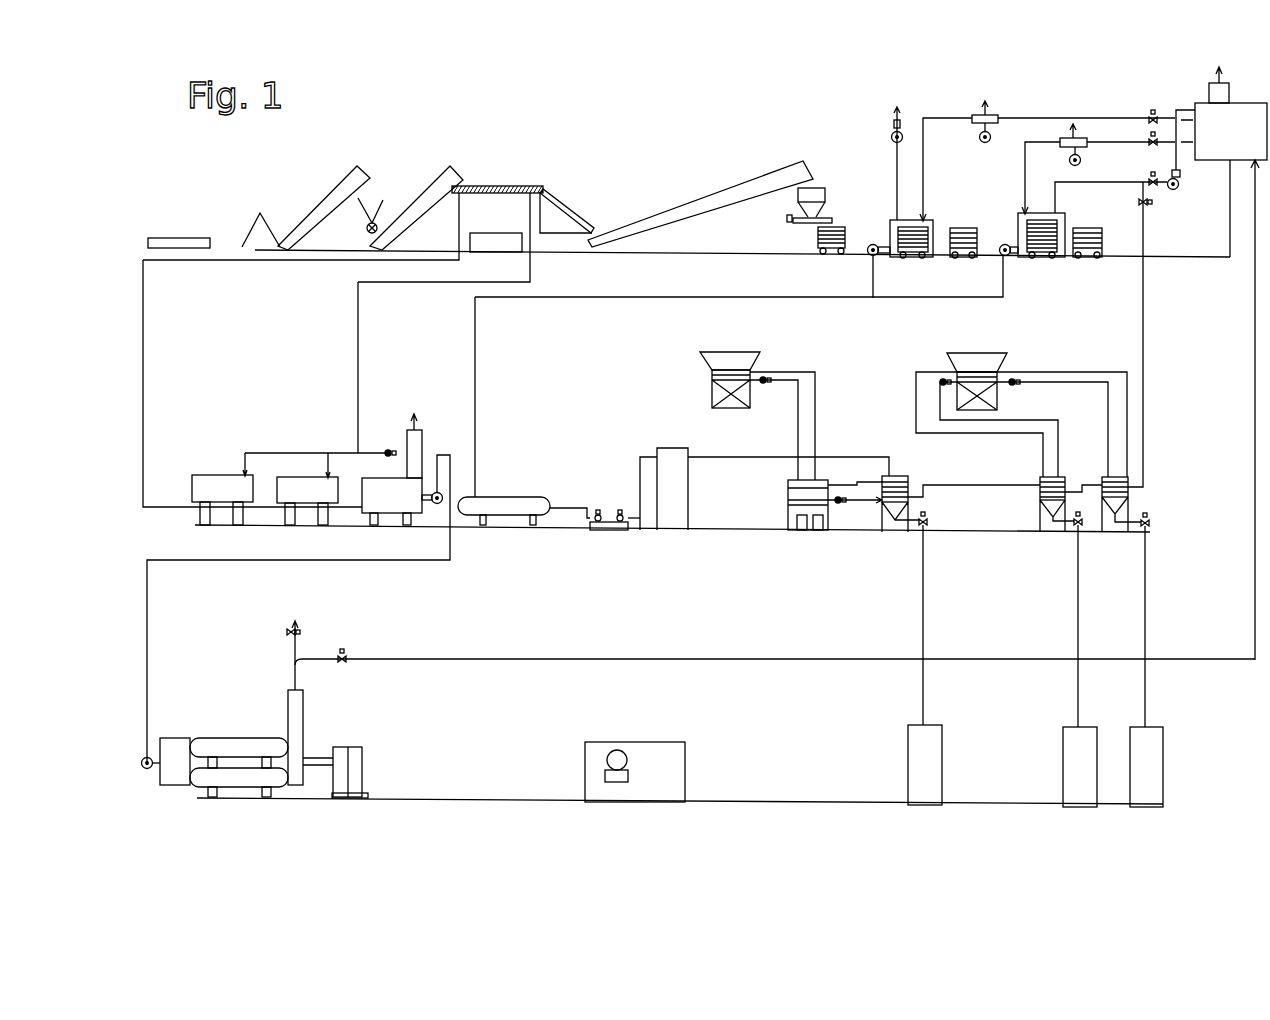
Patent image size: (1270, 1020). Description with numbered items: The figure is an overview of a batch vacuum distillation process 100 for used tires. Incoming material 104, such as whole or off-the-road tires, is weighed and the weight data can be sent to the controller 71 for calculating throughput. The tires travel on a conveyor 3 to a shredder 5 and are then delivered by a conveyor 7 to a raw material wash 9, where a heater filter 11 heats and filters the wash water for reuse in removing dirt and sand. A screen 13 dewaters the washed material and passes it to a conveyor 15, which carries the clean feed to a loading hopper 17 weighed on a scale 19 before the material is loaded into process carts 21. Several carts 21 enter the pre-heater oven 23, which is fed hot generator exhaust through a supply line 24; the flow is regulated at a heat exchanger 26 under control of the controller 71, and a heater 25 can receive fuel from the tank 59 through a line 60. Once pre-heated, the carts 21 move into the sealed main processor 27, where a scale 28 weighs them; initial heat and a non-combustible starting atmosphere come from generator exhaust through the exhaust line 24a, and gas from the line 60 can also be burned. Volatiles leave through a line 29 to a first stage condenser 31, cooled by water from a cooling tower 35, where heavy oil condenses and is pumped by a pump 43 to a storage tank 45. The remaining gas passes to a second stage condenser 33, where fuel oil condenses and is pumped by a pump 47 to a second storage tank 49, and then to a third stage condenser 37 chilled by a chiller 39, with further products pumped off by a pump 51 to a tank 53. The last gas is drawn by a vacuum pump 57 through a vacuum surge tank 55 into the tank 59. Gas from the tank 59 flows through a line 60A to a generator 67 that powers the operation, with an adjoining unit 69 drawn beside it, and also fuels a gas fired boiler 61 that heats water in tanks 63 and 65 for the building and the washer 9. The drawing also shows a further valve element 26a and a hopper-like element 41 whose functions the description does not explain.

The process 100 is at (540, 122).
The incoming material 104 is at (174, 238).
The conveyor 3 is at (338, 186).
The shredder 5 is at (366, 231).
The conveyor 7 is at (435, 178).
The raw material wash 9 is at (498, 185).
The heater filter 11 is at (510, 242).
The screen 13 is at (560, 207).
The conveyor 15 is at (722, 194).
The loading hopper 17 is at (827, 213).
The scale 19 is at (795, 215).
The process carts 21 is at (817, 250).
The pre-heater oven 23 is at (923, 257).
The supply line 24 is at (940, 117).
The heater 25 is at (873, 244).
The heat exchanger 26 is at (995, 115).
The second control valve 26a is at (1082, 138).
The main processor 27 is at (1020, 235).
The scale 28 is at (1035, 257).
The line 29 is at (1100, 182).
The first stage condenser 31 is at (1113, 527).
The second stage condenser 33 is at (1050, 527).
The cooling tower 35 is at (962, 362).
The third stage condenser 37 is at (893, 527).
The chiller 39 is at (803, 530).
The hopper 41 is at (745, 363).
The pump 43 is at (1152, 522).
The storage tank 45 is at (1152, 773).
The pump 47 is at (1083, 523).
The second storage tank 49 is at (1078, 768).
The pump 51 is at (927, 522).
The tank 53 is at (932, 770).
The vacuum surge tank 55 is at (663, 463).
The vacuum pump 57 is at (607, 513).
The tank 59 is at (528, 507).
The line 60 is at (477, 417).
The line 60A is at (147, 657).
The gas fired boiler 61 is at (392, 497).
The tank 63 is at (305, 490).
The tank 65 is at (219, 492).
The generator 67 is at (262, 743).
The motor 69 is at (358, 782).
The controller 71 is at (667, 758).
The exhaust line 24a is at (485, 658).